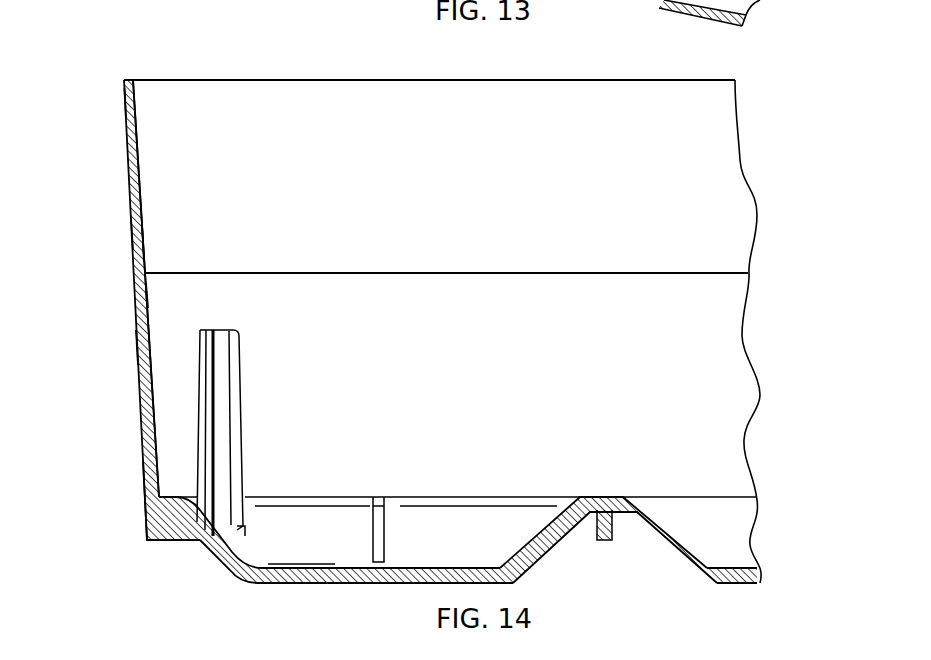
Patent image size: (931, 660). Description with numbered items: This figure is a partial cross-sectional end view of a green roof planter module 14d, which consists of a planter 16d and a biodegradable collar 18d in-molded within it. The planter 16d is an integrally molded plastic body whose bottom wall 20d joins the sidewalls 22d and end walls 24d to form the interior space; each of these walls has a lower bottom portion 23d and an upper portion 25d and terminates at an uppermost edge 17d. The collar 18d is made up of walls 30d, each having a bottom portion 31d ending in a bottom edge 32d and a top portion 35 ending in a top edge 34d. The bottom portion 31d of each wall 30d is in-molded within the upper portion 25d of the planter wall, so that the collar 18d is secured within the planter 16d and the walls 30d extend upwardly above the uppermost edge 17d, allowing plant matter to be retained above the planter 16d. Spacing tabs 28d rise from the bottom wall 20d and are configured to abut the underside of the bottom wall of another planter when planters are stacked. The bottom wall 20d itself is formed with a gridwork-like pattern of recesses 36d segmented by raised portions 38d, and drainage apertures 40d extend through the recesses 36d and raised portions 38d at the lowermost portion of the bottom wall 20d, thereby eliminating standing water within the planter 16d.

The green roof planter module 14d is at (214, 55).
The top edge 34d is at (126, 80).
The walls 30d is at (270, 115).
The top portion 35 is at (127, 98).
The biodegradable collar 18d is at (118, 125).
The bottom portion 31d is at (143, 243).
The uppermost edge 17d is at (133, 232).
The bottom edge 32d is at (147, 272).
The upper portion 25d is at (141, 295).
The planter 16d is at (125, 318).
The sidewalls 22d is at (138, 342).
The spacing tabs 28d is at (227, 407).
The end walls 24d is at (508, 372).
The bottom portion 23d is at (147, 462).
The bottom wall 20d is at (317, 500).
The drainage apertures 40d is at (378, 527).
The recesses 36d is at (427, 568).
The raised portions 38d is at (605, 498).